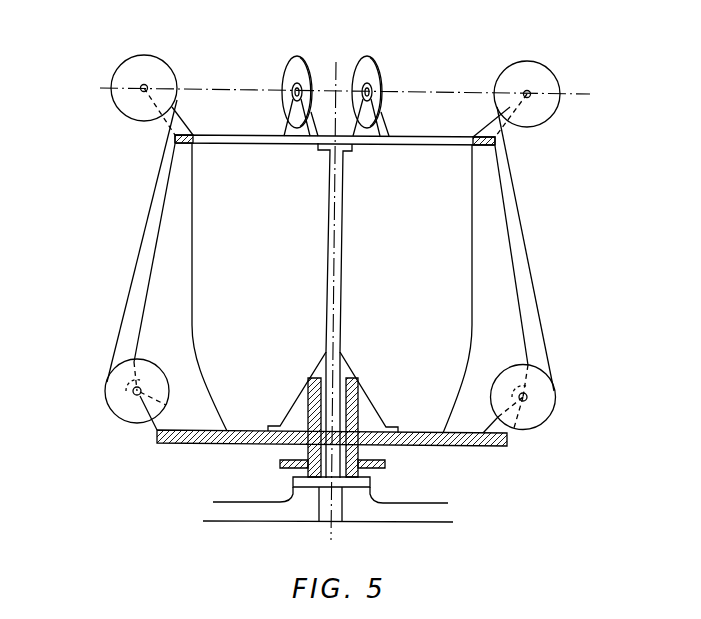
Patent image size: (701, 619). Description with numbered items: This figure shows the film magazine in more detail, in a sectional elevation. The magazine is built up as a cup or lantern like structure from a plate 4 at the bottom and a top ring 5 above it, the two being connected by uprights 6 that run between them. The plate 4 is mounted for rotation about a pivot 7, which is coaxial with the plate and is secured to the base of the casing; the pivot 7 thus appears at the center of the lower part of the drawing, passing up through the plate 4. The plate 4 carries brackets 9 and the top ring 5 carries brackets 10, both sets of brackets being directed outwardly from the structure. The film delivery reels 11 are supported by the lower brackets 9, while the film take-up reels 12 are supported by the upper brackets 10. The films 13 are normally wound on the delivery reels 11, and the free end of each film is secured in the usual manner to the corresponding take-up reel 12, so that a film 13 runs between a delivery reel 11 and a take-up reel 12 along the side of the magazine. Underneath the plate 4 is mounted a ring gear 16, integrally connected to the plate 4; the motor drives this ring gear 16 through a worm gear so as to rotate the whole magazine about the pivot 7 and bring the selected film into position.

The plate 4 is at (212, 443).
The top ring 5 is at (423, 135).
The uprights 6 is at (497, 297).
The pivot 7 is at (318, 508).
The brackets 9 is at (149, 421).
The brackets 10 is at (141, 92).
The film delivery reels 11 is at (108, 404).
The film take-up reels 12 is at (158, 58).
The films 13 is at (128, 293).
The ring gear 16 is at (387, 465).